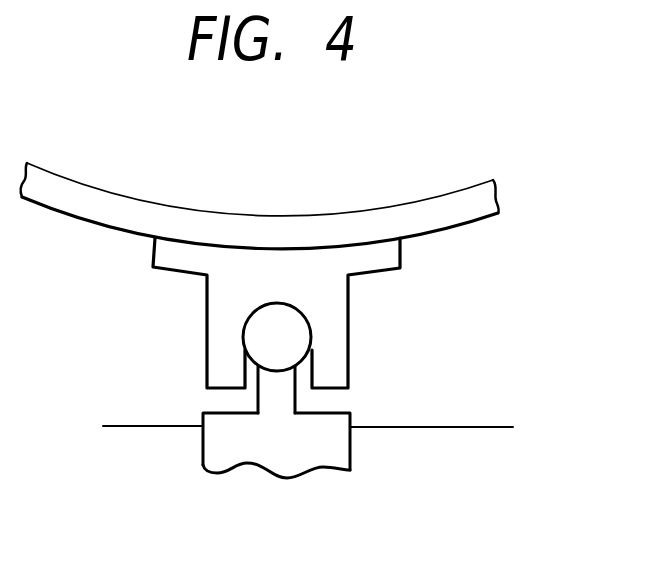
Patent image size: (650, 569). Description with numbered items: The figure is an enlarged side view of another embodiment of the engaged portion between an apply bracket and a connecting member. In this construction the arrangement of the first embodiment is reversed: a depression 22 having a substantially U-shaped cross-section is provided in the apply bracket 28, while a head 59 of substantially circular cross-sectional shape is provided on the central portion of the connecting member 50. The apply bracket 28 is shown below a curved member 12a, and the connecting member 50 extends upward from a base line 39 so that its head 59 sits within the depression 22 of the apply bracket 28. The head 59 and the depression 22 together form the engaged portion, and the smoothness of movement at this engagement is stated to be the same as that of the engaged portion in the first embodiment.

The curved surface of member 12 12a is at (372, 223).
The apply bracket 28 is at (378, 255).
The depression 22 is at (303, 318).
The head 59 is at (265, 337).
The connecting member 50 is at (318, 452).
The mounting plane 39 is at (483, 453).